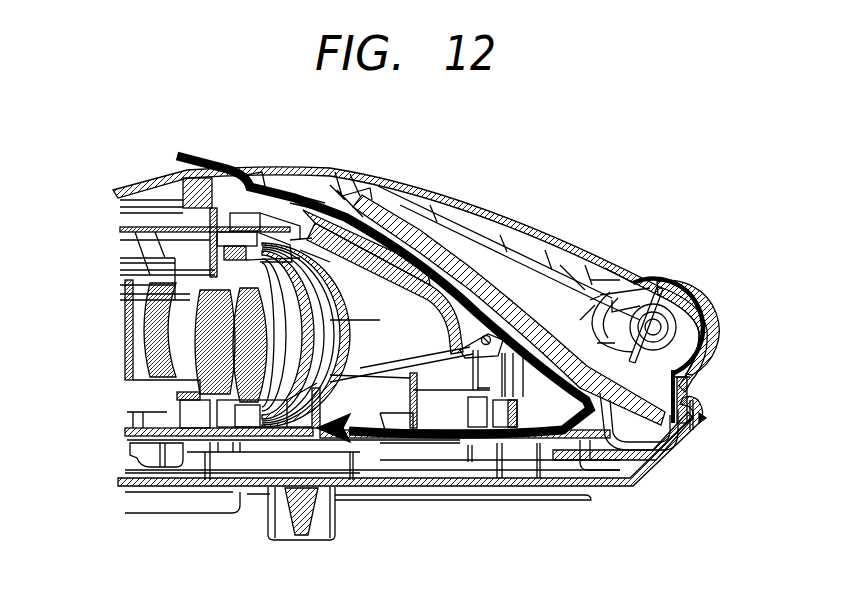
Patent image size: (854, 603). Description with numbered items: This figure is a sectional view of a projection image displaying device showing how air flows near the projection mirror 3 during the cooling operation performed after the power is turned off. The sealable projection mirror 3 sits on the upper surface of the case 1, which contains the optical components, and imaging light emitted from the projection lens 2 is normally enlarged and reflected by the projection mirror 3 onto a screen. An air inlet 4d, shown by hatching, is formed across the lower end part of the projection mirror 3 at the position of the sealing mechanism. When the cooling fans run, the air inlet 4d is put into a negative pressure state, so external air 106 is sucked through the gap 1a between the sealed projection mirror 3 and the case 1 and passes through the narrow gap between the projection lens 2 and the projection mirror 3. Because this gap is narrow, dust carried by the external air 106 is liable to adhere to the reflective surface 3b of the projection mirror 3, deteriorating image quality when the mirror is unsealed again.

The case 1 is at (157, 186).
The gap 1a is at (250, 170).
The external air 106 is at (305, 200).
The projection mirror 3 is at (423, 190).
The reflective surface 3b is at (468, 284).
The projection lens 2 is at (387, 270).
The air inlet 4d is at (489, 348).